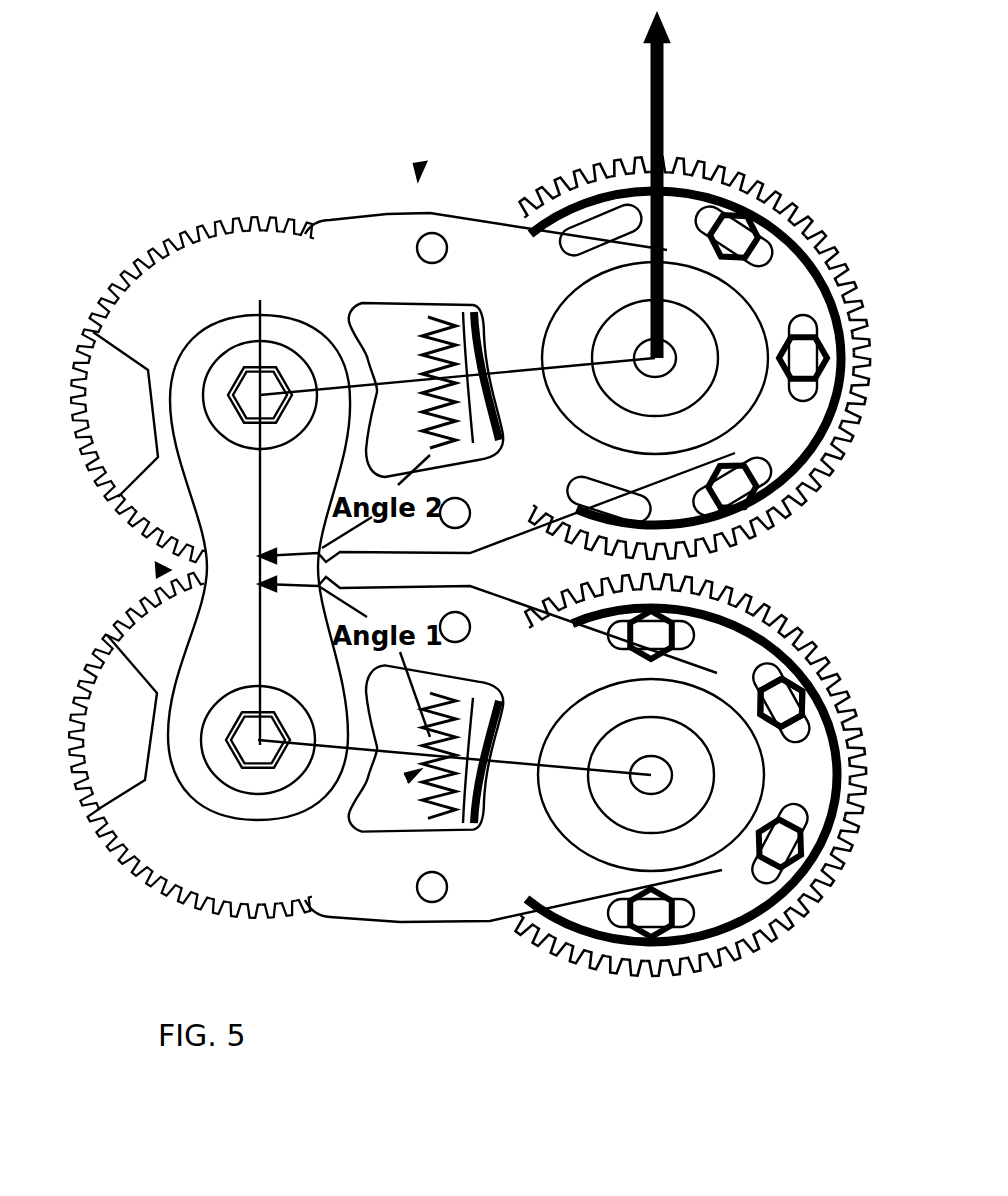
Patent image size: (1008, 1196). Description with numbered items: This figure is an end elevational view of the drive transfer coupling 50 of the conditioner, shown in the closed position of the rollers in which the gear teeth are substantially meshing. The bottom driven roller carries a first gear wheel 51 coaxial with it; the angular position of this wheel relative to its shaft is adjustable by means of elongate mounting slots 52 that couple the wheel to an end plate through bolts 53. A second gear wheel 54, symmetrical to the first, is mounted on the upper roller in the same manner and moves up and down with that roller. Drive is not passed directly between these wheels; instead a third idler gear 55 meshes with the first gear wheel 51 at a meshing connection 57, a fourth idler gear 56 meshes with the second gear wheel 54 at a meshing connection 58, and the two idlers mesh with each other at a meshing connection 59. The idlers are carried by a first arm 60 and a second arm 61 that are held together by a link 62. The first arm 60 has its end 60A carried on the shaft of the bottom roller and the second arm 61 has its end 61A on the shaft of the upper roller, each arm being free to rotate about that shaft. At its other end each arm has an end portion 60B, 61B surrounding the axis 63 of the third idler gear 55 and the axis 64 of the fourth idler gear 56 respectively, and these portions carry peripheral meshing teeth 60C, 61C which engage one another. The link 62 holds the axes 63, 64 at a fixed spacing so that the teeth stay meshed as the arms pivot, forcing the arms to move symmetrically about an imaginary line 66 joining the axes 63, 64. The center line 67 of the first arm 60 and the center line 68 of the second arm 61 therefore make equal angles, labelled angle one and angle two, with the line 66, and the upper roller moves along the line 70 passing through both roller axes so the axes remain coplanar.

The coupling 50 is at (420, 175).
The first gear wheel 51 is at (768, 640).
The elongate mounting slots 52 is at (808, 722).
The bolts 53 is at (812, 700).
The second gear wheel 54 is at (808, 245).
The third idler gear 55 is at (128, 710).
The fourth idler gear 56 is at (62, 335).
The meshing connection 57 is at (418, 772).
The meshing connection 58 is at (414, 358).
The meshing connection 59 is at (164, 570).
The first arm 60 is at (472, 914).
The end of first arm 60A is at (693, 873).
The end portion of first arm 60B is at (150, 847).
The meshing teeth 60C is at (253, 903).
The second arm 61 is at (202, 272).
The end of second arm 61A is at (697, 300).
The end portion of second arm 61B is at (155, 285).
The meshing teeth 61C is at (252, 232).
The link 62 is at (216, 509).
The axis 63 is at (232, 762).
The axis 64 is at (262, 385).
The imaginary line 66 is at (260, 502).
The center line 67 is at (512, 770).
The center line 68 is at (512, 372).
The line 70 is at (663, 102).